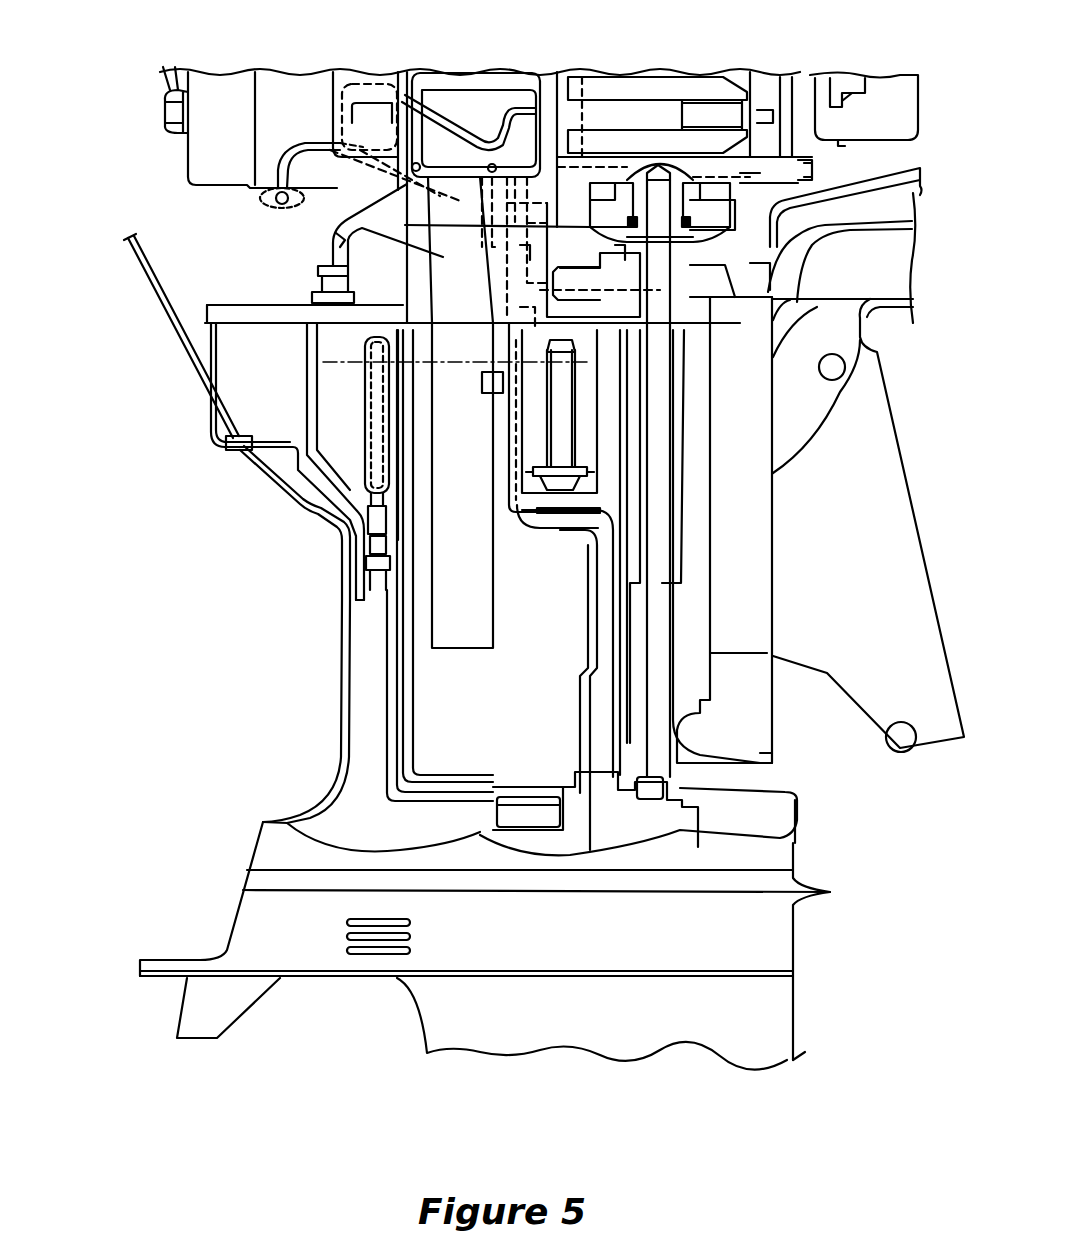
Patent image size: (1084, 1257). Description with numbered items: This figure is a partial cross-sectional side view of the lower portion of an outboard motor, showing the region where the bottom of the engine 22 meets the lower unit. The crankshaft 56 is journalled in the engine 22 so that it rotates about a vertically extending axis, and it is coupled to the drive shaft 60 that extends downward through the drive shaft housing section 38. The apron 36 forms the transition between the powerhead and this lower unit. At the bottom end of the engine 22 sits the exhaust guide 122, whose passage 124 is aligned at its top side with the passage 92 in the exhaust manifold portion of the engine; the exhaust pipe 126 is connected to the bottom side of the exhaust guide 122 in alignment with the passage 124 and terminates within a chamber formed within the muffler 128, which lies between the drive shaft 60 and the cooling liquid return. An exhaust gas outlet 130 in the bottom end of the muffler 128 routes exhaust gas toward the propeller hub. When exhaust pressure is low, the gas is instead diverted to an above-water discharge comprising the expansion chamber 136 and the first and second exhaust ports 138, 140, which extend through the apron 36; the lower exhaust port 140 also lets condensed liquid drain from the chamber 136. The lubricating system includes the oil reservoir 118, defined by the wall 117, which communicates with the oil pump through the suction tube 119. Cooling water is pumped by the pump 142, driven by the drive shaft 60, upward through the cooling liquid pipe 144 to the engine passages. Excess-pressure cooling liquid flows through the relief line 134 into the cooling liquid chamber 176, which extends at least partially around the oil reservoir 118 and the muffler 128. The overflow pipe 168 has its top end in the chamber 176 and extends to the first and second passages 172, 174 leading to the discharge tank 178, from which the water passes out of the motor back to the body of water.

The engine 22 is at (172, 161).
The apron 36 is at (260, 487).
The drive shaft housing section 38 is at (320, 800).
The crankshaft 56 is at (672, 85).
The drive shaft 60 is at (655, 498).
The exhaust passage 92 is at (313, 142).
The wall 117 is at (400, 422).
The oil reservoir 118 is at (340, 488).
The suction tube 119 is at (560, 437).
The exhaust guide 122 is at (210, 313).
The passage 124 is at (340, 227).
The exhaust pipe 126 is at (488, 602).
The muffler 128 is at (410, 727).
The exhaust gas outlet 130 is at (527, 806).
The relief line 134 is at (317, 253).
The expansion chamber 136 is at (217, 365).
The first exhaust port 138 is at (190, 342).
The second exhaust port 140 is at (225, 441).
The pump 142 is at (660, 815).
The cooling liquid pipe 144 is at (605, 648).
The overflow pipe 168 is at (365, 437).
The first passage 172 is at (350, 537).
The second passage 174 is at (373, 562).
The cooling liquid chamber 176 is at (397, 668).
The discharge tank 178 is at (360, 707).